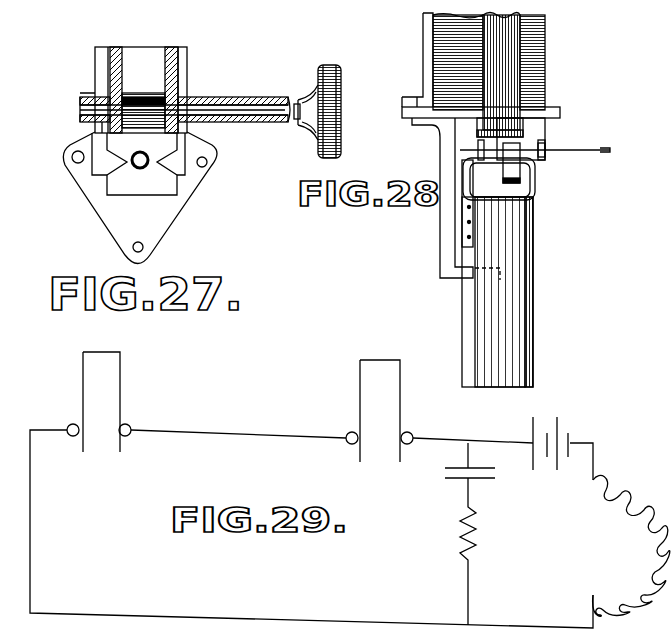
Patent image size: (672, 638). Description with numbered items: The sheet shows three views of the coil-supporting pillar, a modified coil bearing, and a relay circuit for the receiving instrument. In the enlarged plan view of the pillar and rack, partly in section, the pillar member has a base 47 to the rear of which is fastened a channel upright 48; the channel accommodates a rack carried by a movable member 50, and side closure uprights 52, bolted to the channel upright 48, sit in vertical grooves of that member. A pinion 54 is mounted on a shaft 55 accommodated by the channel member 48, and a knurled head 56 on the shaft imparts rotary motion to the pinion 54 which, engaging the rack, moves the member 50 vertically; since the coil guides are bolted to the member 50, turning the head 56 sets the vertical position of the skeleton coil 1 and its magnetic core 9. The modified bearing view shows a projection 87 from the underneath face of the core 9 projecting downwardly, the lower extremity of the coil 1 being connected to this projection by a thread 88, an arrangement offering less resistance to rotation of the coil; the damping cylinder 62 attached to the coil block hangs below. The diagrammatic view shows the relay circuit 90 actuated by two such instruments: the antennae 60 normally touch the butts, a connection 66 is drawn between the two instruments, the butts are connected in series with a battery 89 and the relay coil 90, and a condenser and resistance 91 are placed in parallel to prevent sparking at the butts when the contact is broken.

In FIG. 27, the channel upright 48 is at (118, 76).
In FIG. 27, the pinion 54 is at (155, 95).
In FIG. 27, the shaft 55 is at (228, 100).
In FIG. 27, the side closure uprights 52 is at (98, 116).
In FIG. 27, the movable member 50 is at (117, 187).
In FIG. 27, the base 47 is at (125, 236).
In FIG. 28, the knurled head 56 is at (330, 85).
In FIG. 28, the projection 87 is at (437, 122).
In FIG. 28, the magnetic core 9 is at (503, 103).
In FIG. 28, the skeleton coil 1 is at (527, 90).
In FIG. 28, the antenna 60 is at (563, 152).
In FIG. 29, the antenna 60 is at (120, 425).
In FIG. 28, the thread 88 is at (528, 193).
In FIG. 28, the damping cylinder 62 is at (505, 325).
In FIG. 29, the connecting wire 66 is at (346, 440).
In FIG. 29, the battery 89 is at (572, 447).
In FIG. 29, the condenser and resistance 91 is at (478, 530).
In FIG. 29, the relay circuit 90 is at (630, 582).